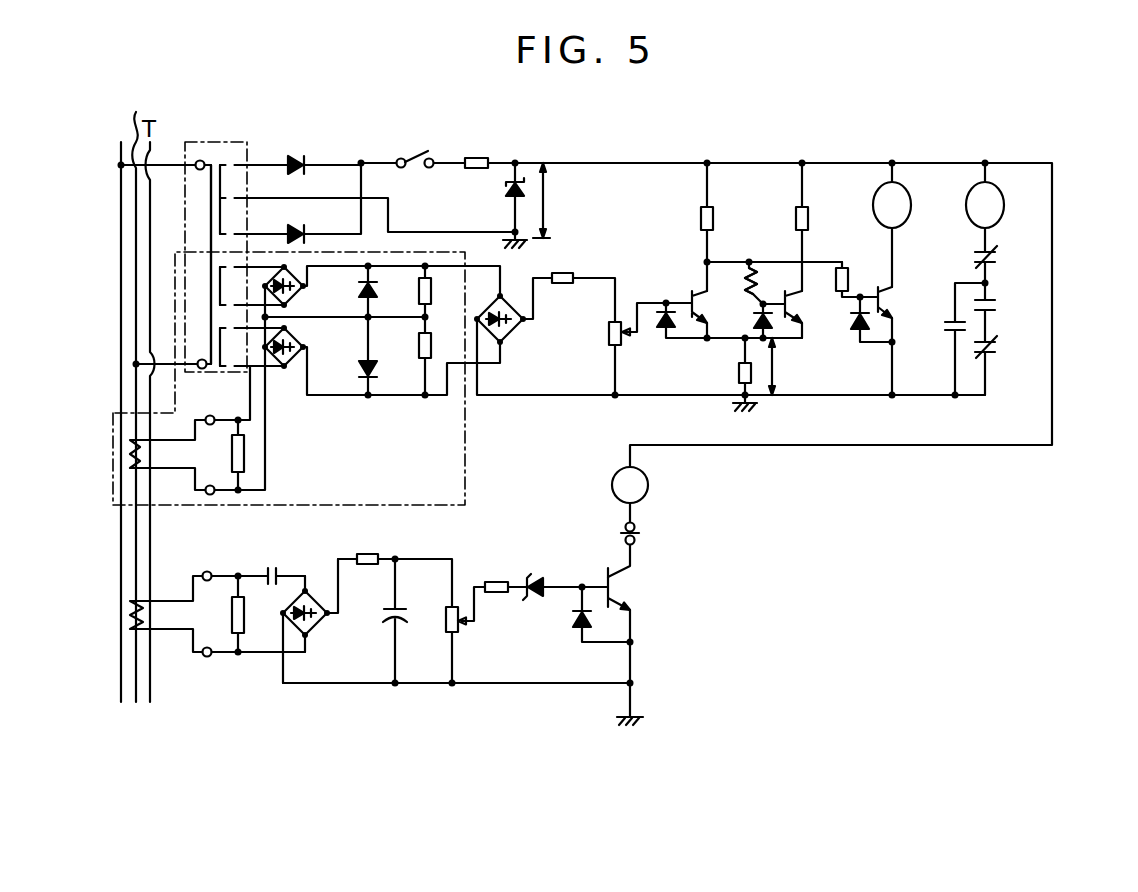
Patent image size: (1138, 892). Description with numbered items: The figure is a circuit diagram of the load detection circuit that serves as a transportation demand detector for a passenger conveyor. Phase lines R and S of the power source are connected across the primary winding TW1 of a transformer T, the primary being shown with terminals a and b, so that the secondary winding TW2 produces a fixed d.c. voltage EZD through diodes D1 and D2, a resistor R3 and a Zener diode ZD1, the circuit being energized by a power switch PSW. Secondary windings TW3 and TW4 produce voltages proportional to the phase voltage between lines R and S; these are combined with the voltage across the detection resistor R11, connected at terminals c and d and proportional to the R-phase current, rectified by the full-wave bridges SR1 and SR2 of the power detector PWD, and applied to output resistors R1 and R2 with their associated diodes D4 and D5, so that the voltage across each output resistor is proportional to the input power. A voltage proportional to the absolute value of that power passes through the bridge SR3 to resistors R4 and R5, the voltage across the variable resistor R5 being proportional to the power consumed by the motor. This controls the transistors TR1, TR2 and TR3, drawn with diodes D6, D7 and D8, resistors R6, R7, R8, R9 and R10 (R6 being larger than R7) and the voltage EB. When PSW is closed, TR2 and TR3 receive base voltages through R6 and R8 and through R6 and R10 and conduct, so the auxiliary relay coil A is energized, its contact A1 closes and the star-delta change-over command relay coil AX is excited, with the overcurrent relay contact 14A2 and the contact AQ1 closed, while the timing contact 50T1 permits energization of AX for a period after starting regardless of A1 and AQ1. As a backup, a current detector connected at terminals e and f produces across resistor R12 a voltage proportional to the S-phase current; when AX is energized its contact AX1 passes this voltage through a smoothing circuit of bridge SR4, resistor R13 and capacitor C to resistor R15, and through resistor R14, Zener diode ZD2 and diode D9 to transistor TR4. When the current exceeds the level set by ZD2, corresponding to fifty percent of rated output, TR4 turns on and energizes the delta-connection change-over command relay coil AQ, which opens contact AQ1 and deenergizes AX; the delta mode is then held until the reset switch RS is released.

The phase terminal R is at (112, 409).
The phase terminal S is at (135, 393).
The transformer T is at (229, 142).
The primary winding TW1 is at (207, 203).
The secondary winding TW2 is at (222, 183).
The secondary winding TW3 is at (218, 286).
The secondary winding TW4 is at (224, 350).
The terminal a is at (199, 160).
The terminal b is at (202, 359).
The terminal c is at (210, 415).
The terminal d is at (214, 479).
The terminal e is at (207, 571).
The terminal f is at (208, 657).
The diode D1 is at (296, 157).
The diode D2 is at (304, 232).
The power switch PSW is at (407, 160).
The resistor R3 is at (475, 157).
The Zener diode ZD1 is at (505, 192).
The fixed d.c. voltage EZD is at (548, 200).
The full-wave rectifying bridge circuit SR1 is at (294, 292).
The full-wave rectifying bridge circuit SR2 is at (300, 342).
The full-wave current bridge circuit SR3 is at (512, 325).
The full-wave rectification bridge circuit SR4 is at (313, 624).
The diode D4 is at (372, 290).
The diode D5 is at (374, 334).
The output resistor R1 is at (431, 290).
The output resistor R2 is at (431, 338).
The resistor R4 is at (570, 278).
The variable resistor R5 is at (608, 326).
The transistor TR1 is at (698, 293).
The transistor TR2 is at (802, 308).
The transistor TR3 is at (890, 293).
The transistor TR4 is at (632, 588).
The resistor R6 is at (710, 220).
The resistor R7 is at (810, 220).
The resistor R8 is at (752, 267).
The resistor R9 is at (740, 366).
The resistor R10 is at (850, 268).
The diode D6 is at (664, 329).
The diode D7 is at (768, 333).
The diode D8 is at (856, 332).
The diode D9 is at (574, 616).
The bias voltage EB is at (769, 366).
The auxiliary relay coil A is at (892, 205).
The relay coil AX is at (985, 205).
The relay coil AQ is at (630, 485).
The contact 14A2 is at (994, 260).
The contact A1 is at (998, 300).
The contact AQ1 is at (1000, 348).
The contact 50T1 is at (950, 321).
The detection resistor R11 is at (236, 449).
The resistor R12 is at (232, 610).
The power detector PWD is at (466, 447).
The contact AX1 is at (266, 571).
The resistor R13 is at (368, 556).
The capacitor C is at (383, 610).
The resistor R15 is at (446, 612).
The resistor R14 is at (492, 582).
The Zener diode ZD2 is at (532, 580).
The reset switch RS is at (640, 535).